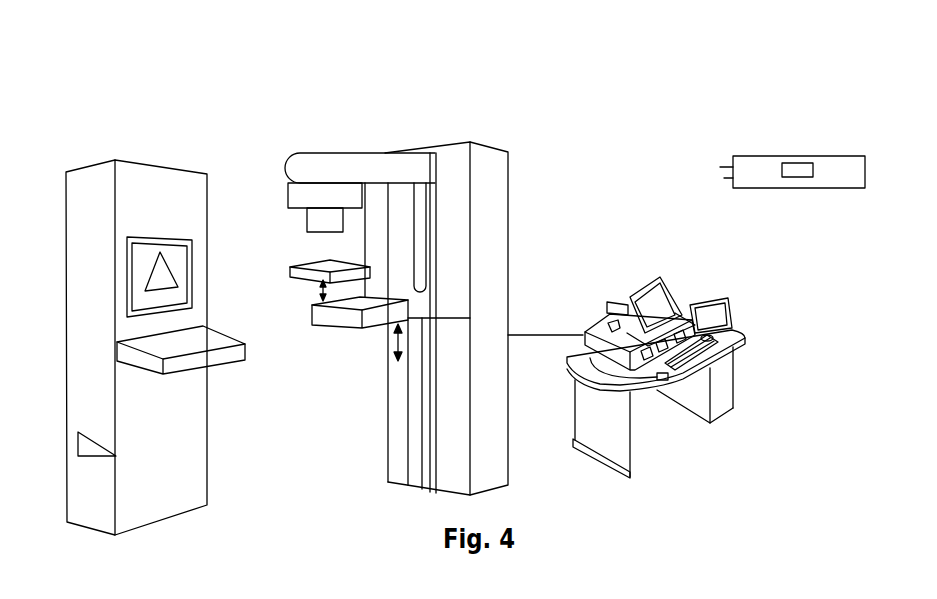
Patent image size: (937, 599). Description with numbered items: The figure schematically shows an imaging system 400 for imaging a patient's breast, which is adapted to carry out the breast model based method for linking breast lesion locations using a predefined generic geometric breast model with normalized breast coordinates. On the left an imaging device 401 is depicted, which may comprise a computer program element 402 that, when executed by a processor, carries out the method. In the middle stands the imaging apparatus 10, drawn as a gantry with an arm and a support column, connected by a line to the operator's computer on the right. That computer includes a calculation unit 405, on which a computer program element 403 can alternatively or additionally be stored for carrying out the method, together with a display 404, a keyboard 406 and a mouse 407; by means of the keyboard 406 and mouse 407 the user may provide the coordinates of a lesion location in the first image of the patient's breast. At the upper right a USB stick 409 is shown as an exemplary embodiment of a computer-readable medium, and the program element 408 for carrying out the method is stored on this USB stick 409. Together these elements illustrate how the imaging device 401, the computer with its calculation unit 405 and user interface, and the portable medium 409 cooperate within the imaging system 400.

The imaging system 400 is at (622, 117).
The imaging apparatus / gantry 10 is at (520, 182).
The imaging device 401 is at (162, 150).
The computer program element 402 is at (78, 439).
The computer program element 403 is at (607, 317).
The display 404 is at (653, 303).
The calculation unit 405 is at (680, 308).
The keyboard 406 is at (730, 363).
The mouse 407 is at (665, 385).
The program element 408 is at (800, 178).
The USB stick 409 is at (778, 155).